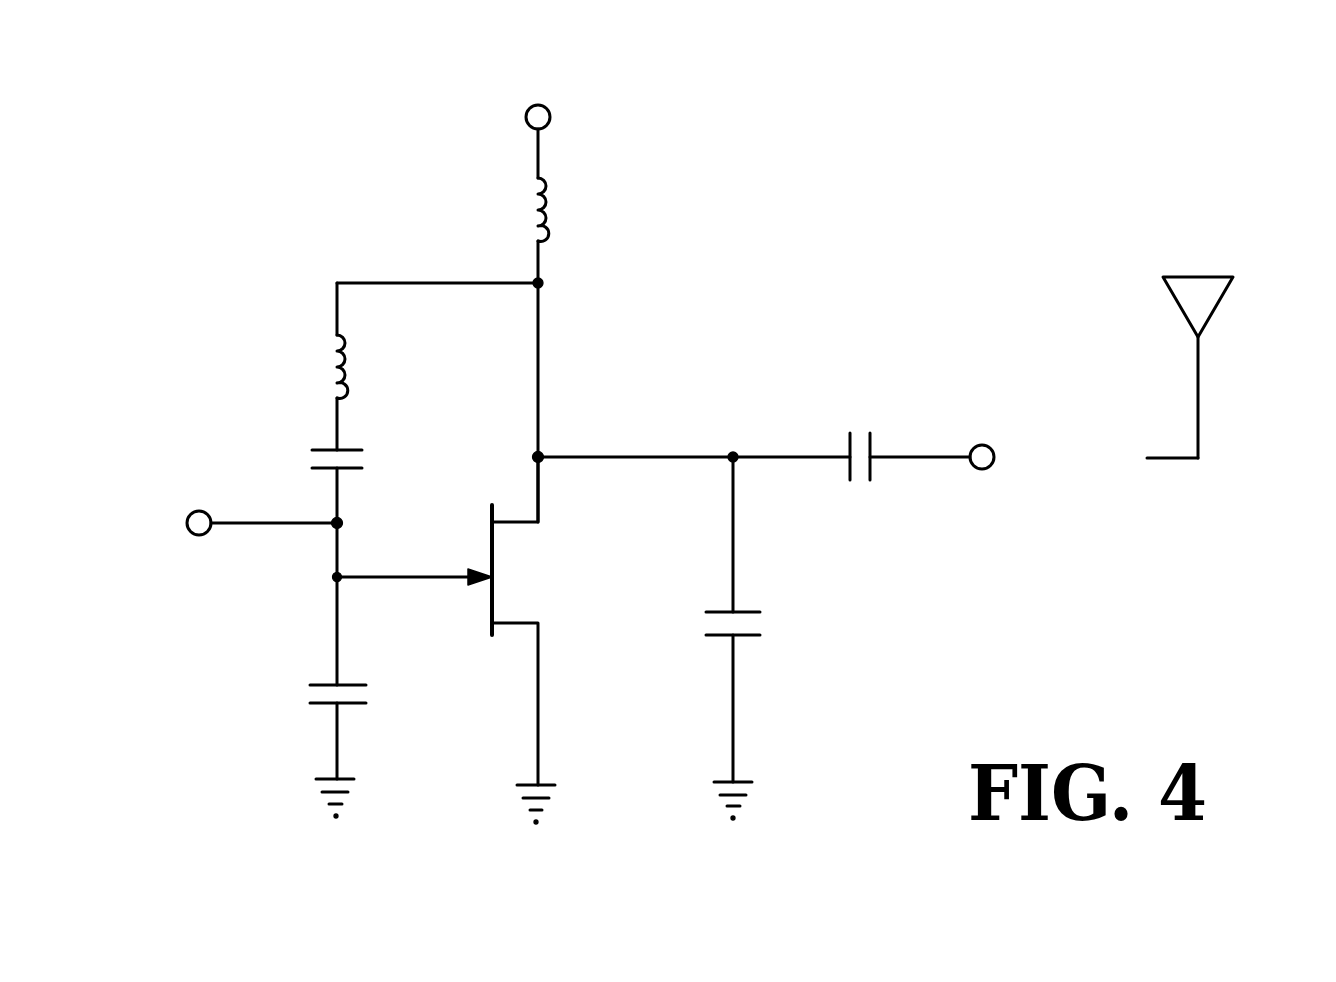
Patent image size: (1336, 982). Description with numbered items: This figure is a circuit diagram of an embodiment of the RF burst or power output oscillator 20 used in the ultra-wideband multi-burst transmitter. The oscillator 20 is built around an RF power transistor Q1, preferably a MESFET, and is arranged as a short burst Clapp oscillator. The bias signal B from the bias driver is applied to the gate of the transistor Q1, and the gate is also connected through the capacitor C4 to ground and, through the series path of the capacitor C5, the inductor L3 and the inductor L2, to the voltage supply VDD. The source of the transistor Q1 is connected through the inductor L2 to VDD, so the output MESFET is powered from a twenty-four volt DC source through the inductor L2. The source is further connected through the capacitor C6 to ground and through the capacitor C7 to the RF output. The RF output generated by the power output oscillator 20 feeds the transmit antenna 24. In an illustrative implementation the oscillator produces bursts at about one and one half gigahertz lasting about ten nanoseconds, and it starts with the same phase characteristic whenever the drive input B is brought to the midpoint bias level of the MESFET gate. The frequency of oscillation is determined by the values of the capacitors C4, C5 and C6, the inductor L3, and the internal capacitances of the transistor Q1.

The RF burst oscillator 20 is at (768, 253).
The transmit antenna 24 is at (1196, 277).
The inductor L2 is at (580, 209).
The inductor L3 is at (379, 366).
The capacitor C4 is at (385, 745).
The capacitor C5 is at (379, 478).
The capacitor C6 is at (779, 638).
The capacitor C7 is at (900, 431).
The RF power transistor Q1 is at (462, 640).